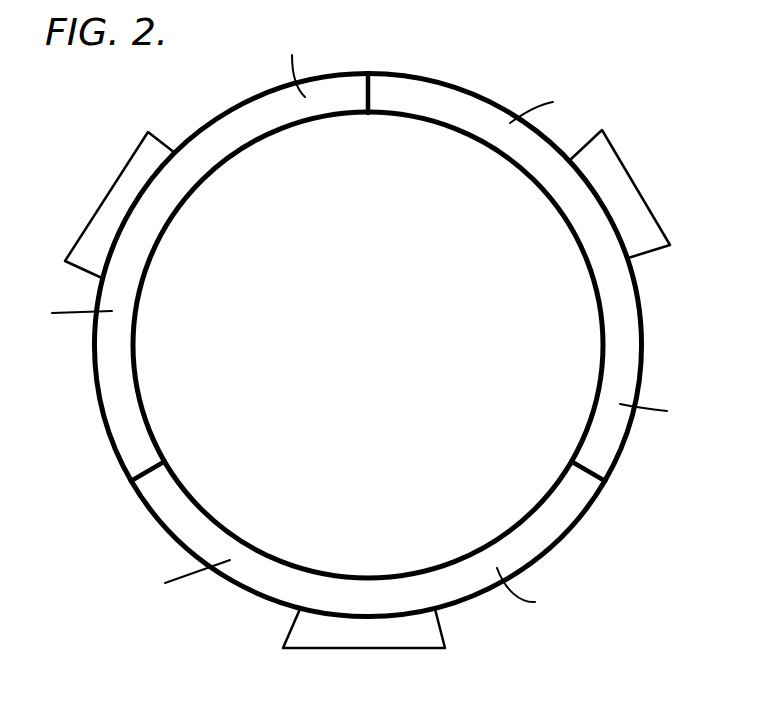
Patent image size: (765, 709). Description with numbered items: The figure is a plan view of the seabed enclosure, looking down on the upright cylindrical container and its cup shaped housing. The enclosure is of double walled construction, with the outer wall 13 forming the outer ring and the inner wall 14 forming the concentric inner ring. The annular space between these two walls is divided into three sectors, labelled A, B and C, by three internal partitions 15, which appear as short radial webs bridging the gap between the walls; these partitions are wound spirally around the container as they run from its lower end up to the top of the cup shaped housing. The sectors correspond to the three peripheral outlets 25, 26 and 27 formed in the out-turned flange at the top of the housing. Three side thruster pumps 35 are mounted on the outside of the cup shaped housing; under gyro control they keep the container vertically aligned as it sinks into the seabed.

The outer wall 13 is at (365, 337).
The inner wall 14 is at (228, 150).
The internal partitions 15 is at (382, 84).
The peripheral outlet 25 is at (102, 414).
The peripheral outlet 26 is at (642, 311).
The peripheral outlet 27 is at (262, 597).
The side thruster pumps 35 is at (112, 209).